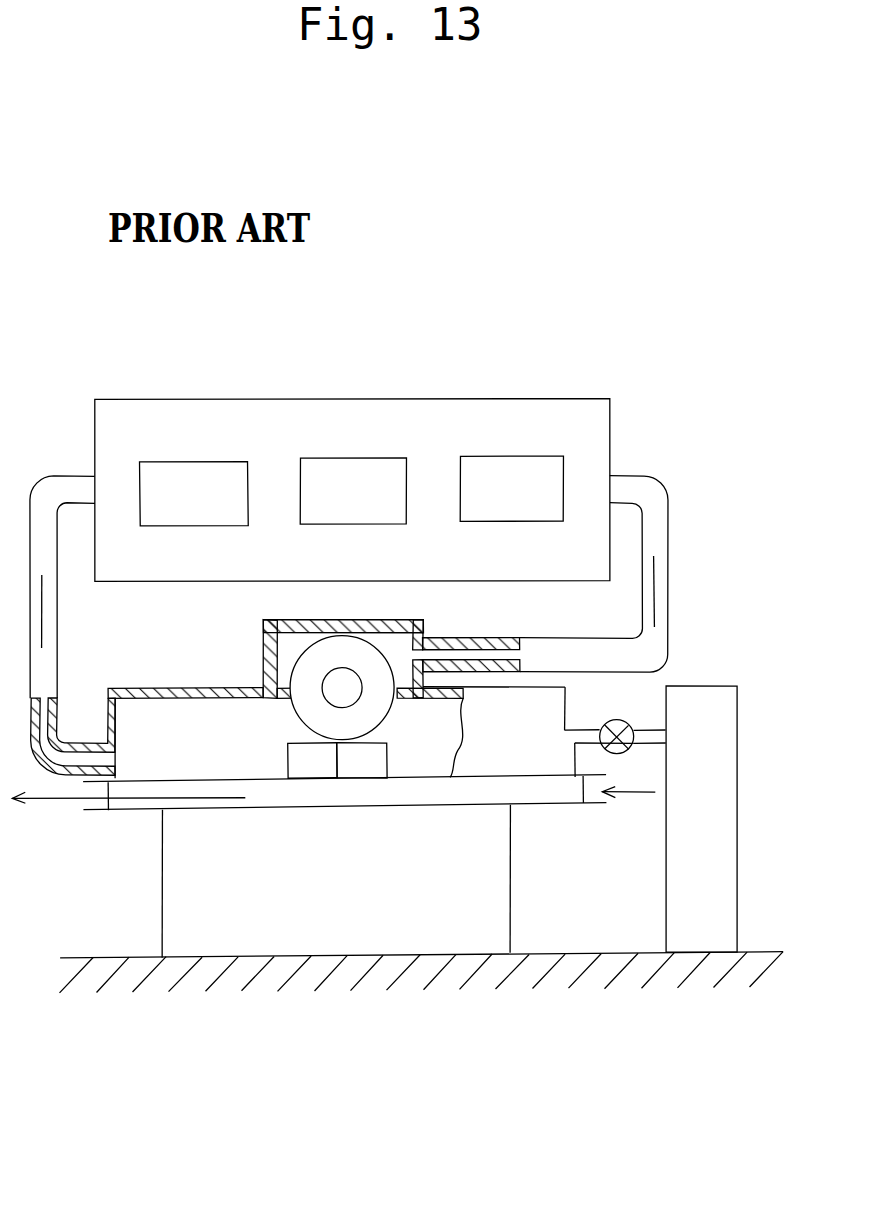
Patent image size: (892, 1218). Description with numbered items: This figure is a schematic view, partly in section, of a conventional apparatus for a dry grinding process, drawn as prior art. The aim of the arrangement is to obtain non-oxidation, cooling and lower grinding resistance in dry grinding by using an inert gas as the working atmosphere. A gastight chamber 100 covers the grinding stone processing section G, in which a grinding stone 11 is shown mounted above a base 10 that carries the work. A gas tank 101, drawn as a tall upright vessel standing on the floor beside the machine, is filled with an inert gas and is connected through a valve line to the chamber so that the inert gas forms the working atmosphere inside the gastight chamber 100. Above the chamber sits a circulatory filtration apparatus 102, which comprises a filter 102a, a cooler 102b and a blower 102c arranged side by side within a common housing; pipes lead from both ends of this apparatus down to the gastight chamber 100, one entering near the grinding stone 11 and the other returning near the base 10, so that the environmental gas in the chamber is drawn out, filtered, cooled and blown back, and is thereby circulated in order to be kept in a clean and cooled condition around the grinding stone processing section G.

The circulatory filtration apparatus 102 is at (501, 391).
The filter 102a is at (199, 459).
The cooler 102b is at (353, 457).
The blower 102c is at (481, 457).
The gastight chamber 100 is at (398, 647).
The roller 11 is at (343, 657).
The base 10 is at (372, 763).
The gas tank 101 is at (712, 754).
The grinding stone processing section G is at (240, 718).